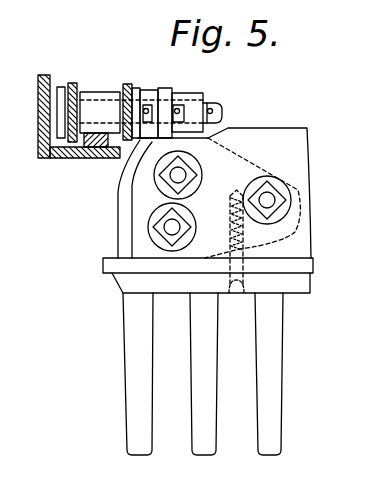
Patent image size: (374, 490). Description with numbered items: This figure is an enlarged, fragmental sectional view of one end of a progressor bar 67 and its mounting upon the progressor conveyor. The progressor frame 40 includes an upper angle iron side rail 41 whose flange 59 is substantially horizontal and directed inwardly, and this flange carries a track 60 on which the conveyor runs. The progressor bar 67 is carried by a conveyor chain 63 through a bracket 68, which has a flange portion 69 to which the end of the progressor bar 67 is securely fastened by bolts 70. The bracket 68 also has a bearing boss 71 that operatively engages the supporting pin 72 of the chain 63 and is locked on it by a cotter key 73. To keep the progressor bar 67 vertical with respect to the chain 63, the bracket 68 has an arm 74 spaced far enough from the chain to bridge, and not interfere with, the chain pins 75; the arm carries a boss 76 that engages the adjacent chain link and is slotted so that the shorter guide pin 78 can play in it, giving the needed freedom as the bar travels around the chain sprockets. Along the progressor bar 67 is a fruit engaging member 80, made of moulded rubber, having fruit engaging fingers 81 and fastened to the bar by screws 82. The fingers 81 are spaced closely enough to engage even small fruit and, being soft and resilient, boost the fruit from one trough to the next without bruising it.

The progressor frame 40 is at (64, 129).
The upper angle iron side rail 41 is at (32, 116).
The flange 59 is at (66, 158).
The track 60 is at (101, 148).
The conveyor chain 63 is at (98, 92).
The progressor bar 67 is at (302, 151).
The bracket 68 is at (119, 207).
The flange portion 69 is at (247, 152).
The bolt 70 is at (174, 225).
The bearing boss 71 is at (196, 96).
The supporting pin 72 is at (219, 105).
The cotter key 73 is at (221, 100).
The arm 74 is at (165, 90).
The chain pin 75 is at (58, 107).
The boss 76 is at (140, 92).
The guide pin 78 is at (147, 124).
The fruit engaging member 80 is at (200, 356).
The fruit engaging finger 81 is at (197, 381).
The screw 82 is at (246, 248).